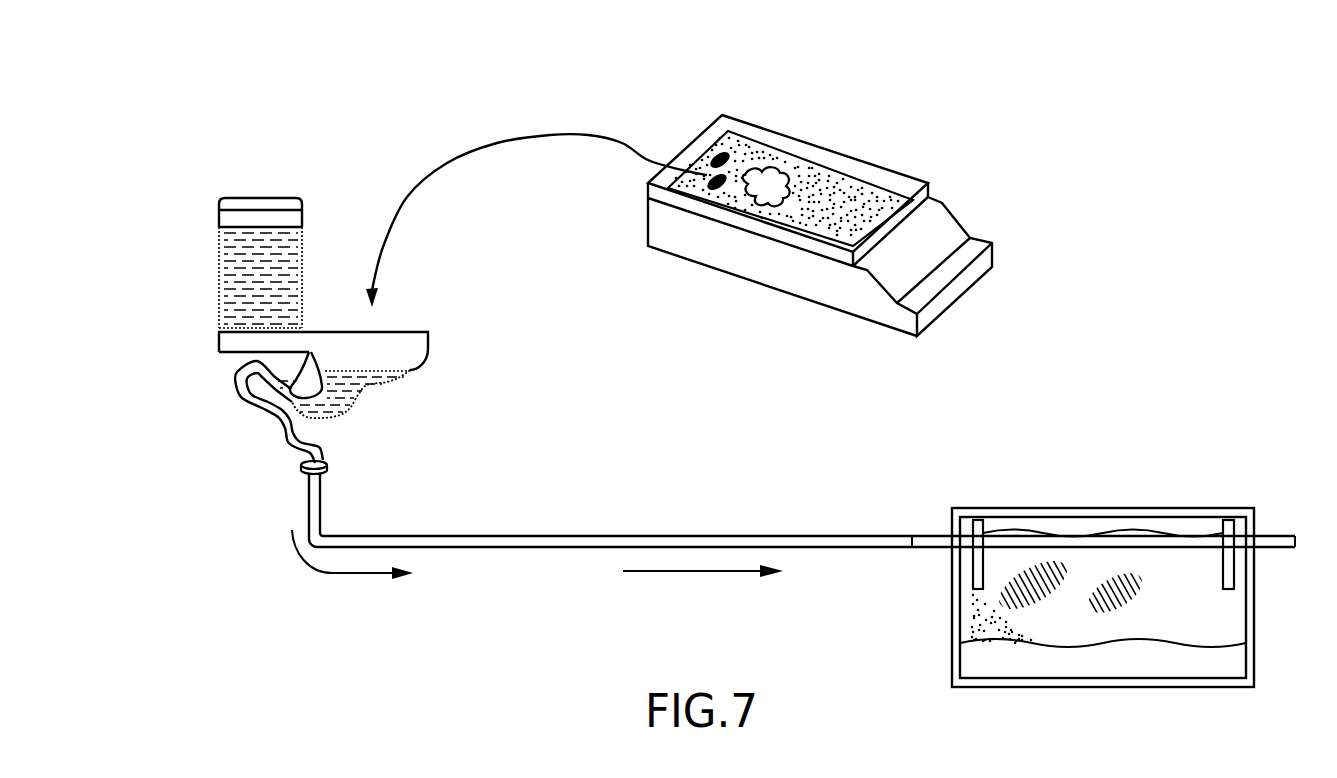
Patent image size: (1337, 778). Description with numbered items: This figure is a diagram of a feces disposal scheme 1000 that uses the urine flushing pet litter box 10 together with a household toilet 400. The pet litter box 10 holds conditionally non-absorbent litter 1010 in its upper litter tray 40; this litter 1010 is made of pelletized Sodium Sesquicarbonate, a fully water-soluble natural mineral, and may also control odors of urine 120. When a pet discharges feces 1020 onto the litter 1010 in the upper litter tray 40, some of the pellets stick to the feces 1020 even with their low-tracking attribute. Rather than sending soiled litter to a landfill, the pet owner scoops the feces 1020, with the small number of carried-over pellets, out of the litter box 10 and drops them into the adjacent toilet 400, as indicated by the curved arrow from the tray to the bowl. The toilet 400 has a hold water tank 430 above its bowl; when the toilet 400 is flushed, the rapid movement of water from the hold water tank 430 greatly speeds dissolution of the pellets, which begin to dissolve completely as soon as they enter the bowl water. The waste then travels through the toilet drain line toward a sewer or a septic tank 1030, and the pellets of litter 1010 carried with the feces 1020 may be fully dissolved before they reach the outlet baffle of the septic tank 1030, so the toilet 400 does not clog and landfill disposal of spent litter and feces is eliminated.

The waste treatment system 1000 is at (231, 115).
The hold water tank 430 is at (228, 263).
The toilet 400 is at (429, 347).
The feces 1020 is at (712, 187).
The upper litter tray 40 is at (733, 218).
The urine 120 is at (763, 203).
The conditionally non-absorbent litter 1010 is at (812, 218).
The urine flushing pet litter box 10 is at (863, 320).
The septic tank 1030 is at (1132, 508).